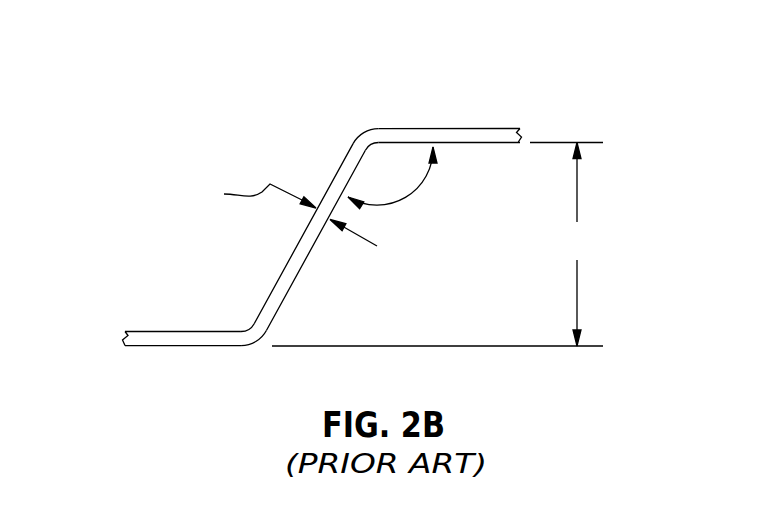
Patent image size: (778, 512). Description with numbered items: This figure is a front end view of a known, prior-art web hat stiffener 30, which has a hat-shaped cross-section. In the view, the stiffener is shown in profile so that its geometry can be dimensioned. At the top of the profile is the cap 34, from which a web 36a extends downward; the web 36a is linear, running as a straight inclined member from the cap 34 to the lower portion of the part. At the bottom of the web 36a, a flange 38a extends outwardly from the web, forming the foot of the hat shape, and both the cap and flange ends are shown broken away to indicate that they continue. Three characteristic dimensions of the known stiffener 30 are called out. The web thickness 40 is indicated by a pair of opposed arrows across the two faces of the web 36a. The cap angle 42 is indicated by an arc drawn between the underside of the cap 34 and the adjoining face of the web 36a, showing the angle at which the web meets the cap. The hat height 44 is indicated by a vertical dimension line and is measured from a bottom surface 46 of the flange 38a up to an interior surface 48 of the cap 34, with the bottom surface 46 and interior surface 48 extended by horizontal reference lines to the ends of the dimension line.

The known web hat stiffener 30 is at (311, 205).
The cap 34 is at (481, 128).
The web 36a is at (294, 283).
The flange 38a is at (157, 330).
The web thickness 40 is at (266, 222).
The cap angle 42 is at (410, 194).
The hat height 44 is at (578, 194).
The bottom surface 46 is at (234, 346).
The interior surface 48 is at (473, 143).